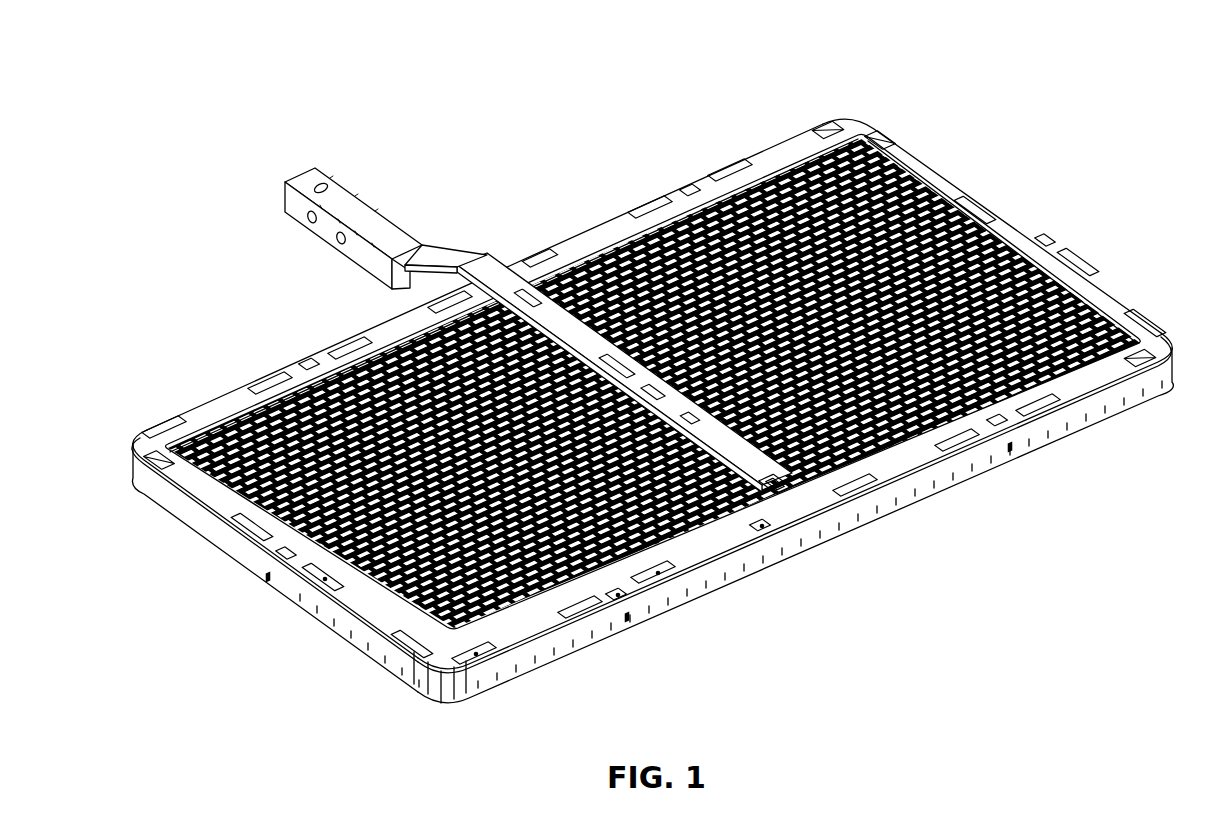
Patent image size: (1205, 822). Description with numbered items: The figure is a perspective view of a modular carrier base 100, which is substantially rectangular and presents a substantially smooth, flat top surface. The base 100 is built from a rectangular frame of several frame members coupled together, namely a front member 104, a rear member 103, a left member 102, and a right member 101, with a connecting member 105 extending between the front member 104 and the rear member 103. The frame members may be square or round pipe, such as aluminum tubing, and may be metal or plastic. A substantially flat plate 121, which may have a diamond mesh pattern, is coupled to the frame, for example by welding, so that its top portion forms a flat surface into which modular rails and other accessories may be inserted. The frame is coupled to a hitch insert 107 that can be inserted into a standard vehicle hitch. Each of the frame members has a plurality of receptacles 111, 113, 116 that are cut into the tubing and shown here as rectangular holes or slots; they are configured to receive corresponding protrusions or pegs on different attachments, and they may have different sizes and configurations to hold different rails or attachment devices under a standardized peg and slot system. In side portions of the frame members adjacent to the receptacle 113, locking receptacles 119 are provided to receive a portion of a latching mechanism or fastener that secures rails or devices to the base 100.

The base 100 is at (652, 359).
The right member 101 is at (943, 176).
The left member 102 is at (233, 553).
The rear member 103 is at (218, 398).
The front member 104 is at (720, 582).
The connecting member 105 is at (778, 520).
The hitch insert 107 is at (350, 203).
The receptacle 111 is at (732, 163).
The receptacle 113 is at (690, 183).
The receptacle 116 is at (826, 127).
The locking receptacle 119 is at (1015, 450).
The plate 121 is at (1055, 290).